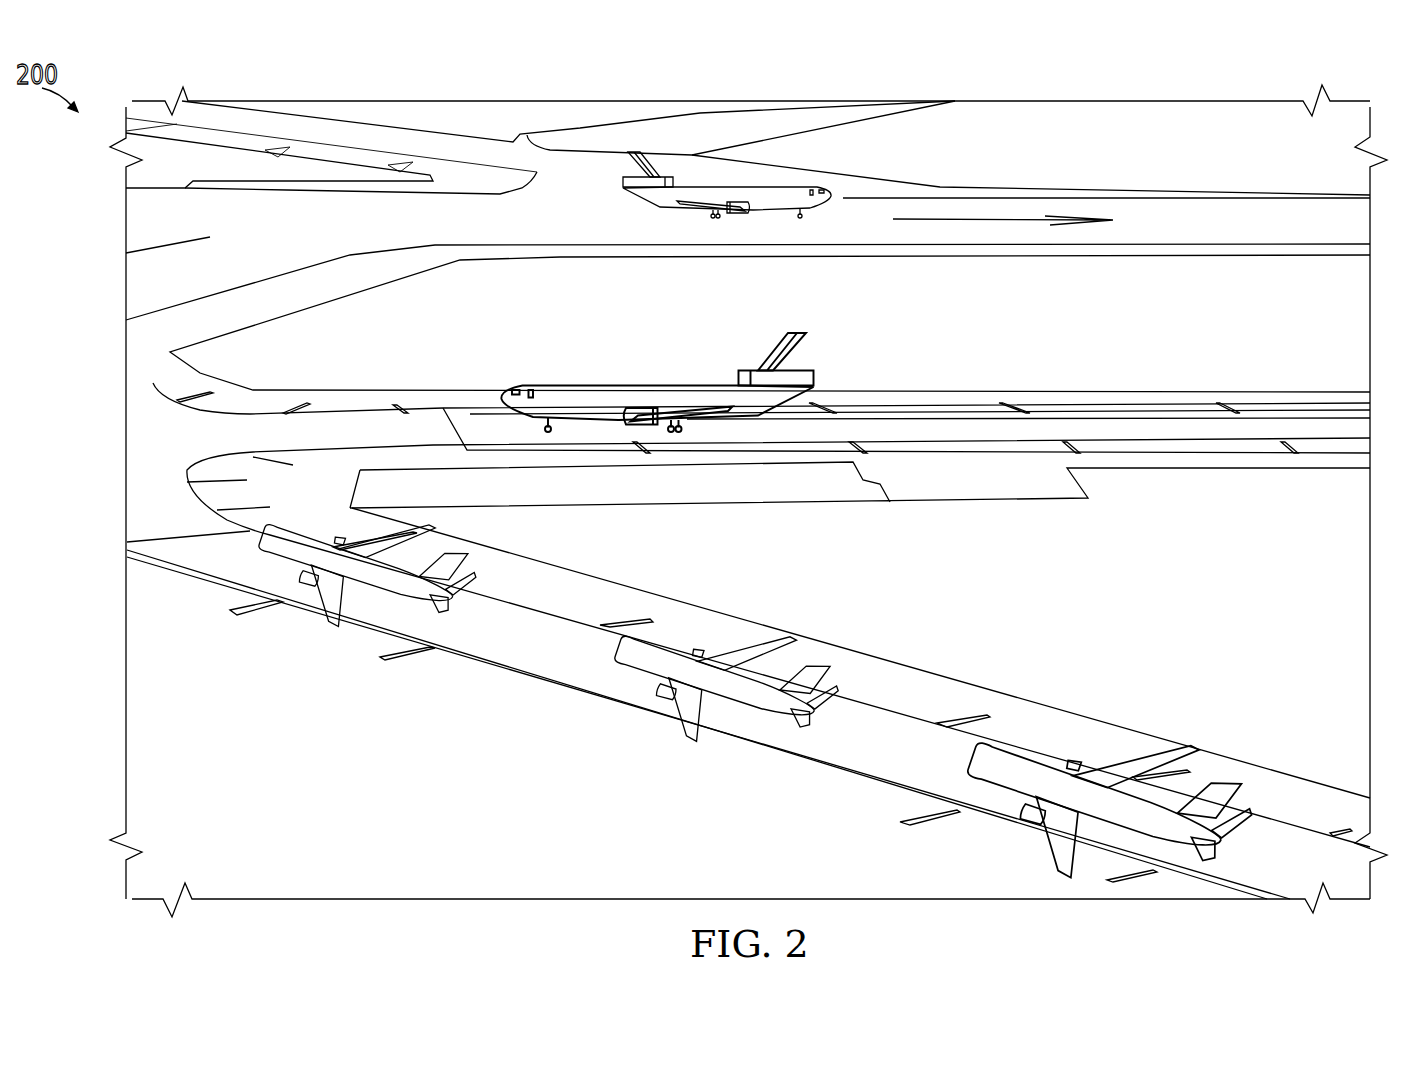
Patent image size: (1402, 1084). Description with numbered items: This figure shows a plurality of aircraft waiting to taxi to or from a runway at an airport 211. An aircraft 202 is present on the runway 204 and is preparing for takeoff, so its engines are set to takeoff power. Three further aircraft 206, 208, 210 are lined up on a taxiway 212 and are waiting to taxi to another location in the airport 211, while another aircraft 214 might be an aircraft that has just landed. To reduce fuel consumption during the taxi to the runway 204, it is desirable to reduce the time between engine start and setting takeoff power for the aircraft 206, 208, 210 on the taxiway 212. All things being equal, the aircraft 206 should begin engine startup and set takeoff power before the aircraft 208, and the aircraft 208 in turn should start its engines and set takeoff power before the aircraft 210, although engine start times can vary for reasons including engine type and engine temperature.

The aircraft 202 is at (777, 215).
The runway 204 is at (1202, 237).
The aircraft 206 is at (230, 580).
The aircraft 208 is at (673, 640).
The aircraft 210 is at (1050, 850).
The airport 211 is at (267, 100).
The taxiway 212 is at (905, 762).
The aircraft 214 is at (585, 373).